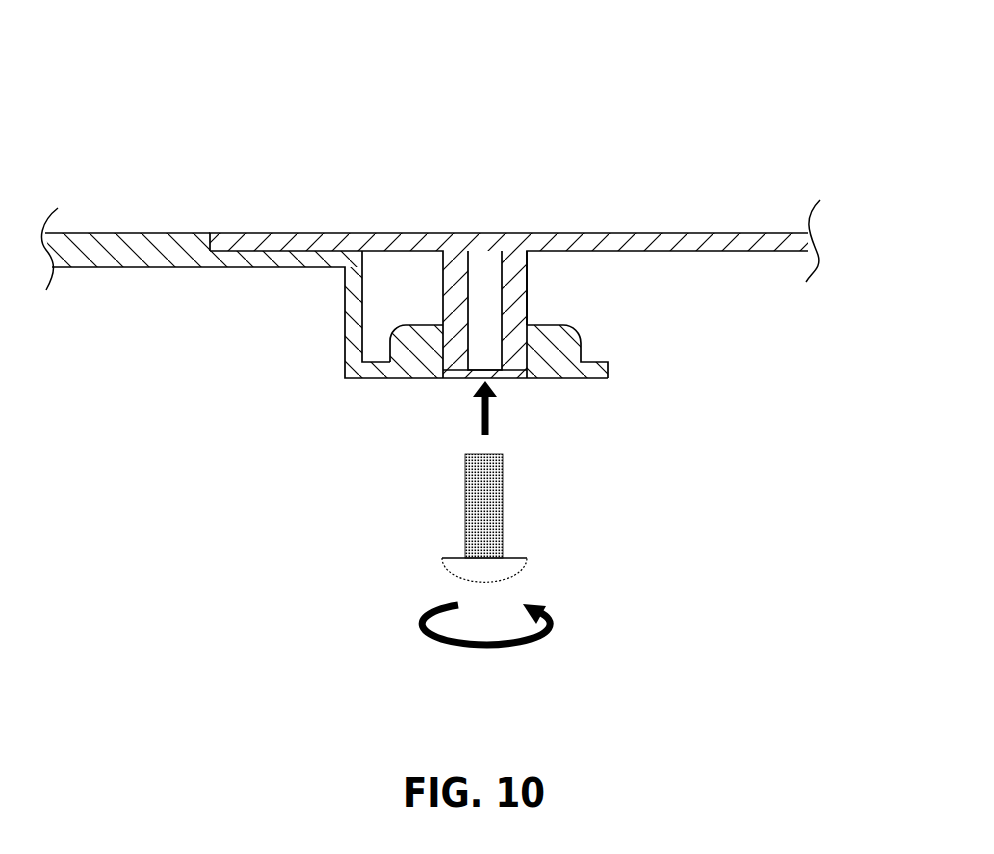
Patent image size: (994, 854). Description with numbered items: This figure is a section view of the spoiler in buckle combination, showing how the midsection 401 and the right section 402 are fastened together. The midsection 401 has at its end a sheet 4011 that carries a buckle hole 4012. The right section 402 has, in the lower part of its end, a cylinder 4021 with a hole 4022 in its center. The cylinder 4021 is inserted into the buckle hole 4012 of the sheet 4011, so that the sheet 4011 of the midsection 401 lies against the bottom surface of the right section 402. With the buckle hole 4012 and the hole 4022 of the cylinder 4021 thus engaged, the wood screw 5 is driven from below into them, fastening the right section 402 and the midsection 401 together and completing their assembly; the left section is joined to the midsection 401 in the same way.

The midsection 401 is at (166, 266).
The right section 402 is at (648, 237).
The sheet 4011 is at (608, 377).
The buckle hole 4012 is at (428, 332).
The cylinder 4021 is at (513, 288).
The hole 4022 is at (487, 273).
The wood screw 5 is at (502, 567).